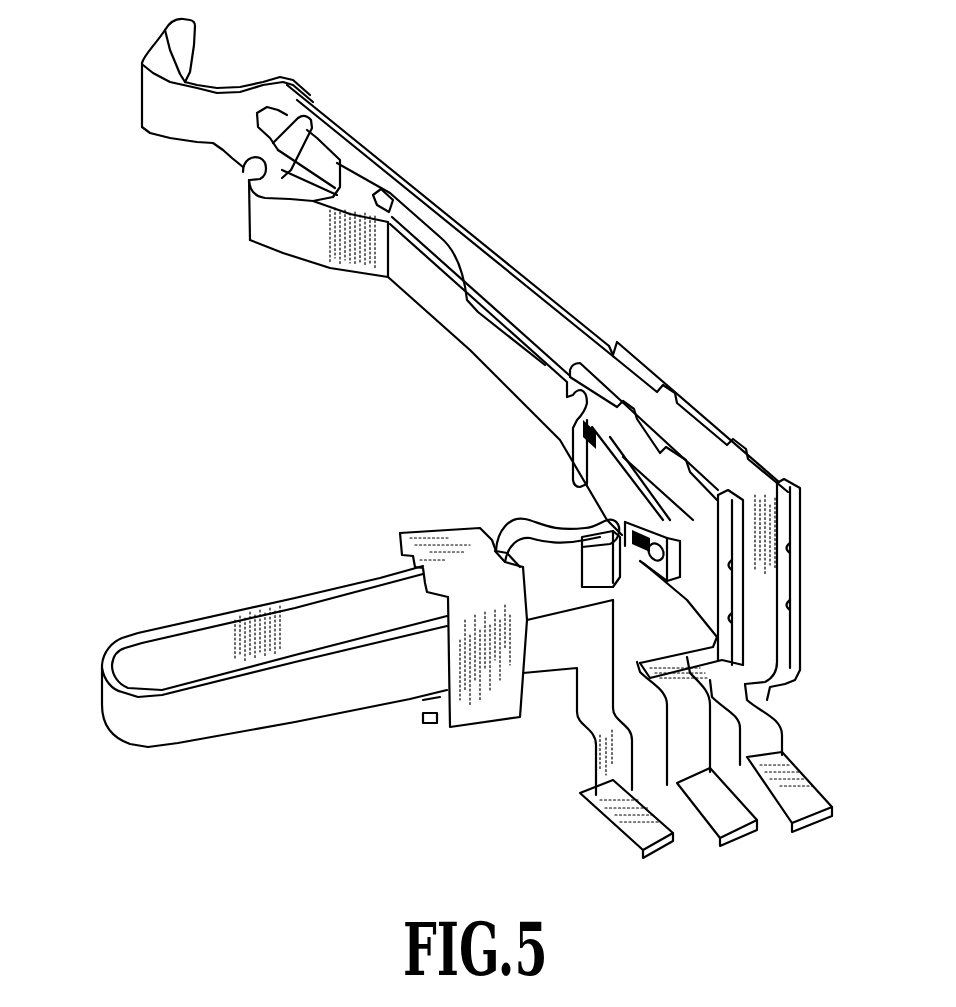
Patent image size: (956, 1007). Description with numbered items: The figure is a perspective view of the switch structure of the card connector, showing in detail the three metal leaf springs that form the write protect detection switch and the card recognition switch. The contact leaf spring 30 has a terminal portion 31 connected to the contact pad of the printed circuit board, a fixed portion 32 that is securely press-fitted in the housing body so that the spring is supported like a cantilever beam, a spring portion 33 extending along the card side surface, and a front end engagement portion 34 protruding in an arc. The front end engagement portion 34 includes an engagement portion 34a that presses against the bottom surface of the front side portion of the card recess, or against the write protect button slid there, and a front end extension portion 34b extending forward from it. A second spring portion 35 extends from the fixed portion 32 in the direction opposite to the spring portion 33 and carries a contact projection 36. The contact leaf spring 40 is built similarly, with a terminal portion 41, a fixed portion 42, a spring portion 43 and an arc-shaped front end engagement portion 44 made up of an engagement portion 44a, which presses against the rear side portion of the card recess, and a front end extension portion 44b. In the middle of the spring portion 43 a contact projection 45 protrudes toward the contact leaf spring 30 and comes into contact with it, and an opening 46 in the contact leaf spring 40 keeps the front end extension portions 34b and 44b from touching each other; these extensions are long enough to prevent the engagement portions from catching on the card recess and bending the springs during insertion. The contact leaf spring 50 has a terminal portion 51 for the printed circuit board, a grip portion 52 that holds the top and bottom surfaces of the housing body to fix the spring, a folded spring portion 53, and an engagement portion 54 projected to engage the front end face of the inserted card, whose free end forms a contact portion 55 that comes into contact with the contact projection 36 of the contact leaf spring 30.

The contact leaf spring 30 is at (455, 506).
The terminal portion 31 is at (712, 805).
The fixed portion 32 is at (647, 447).
The spring portion 33 is at (477, 293).
The front end engagement portion 34 is at (270, 215).
The engagement portion 34a is at (244, 208).
The front end extension portion 34b is at (243, 167).
The spring portion 35 is at (580, 473).
The contact projection 36 is at (643, 573).
The contact leaf spring 40 is at (460, 416).
The terminal portion 41 is at (807, 783).
The fixed portion 42 is at (763, 473).
The spring portion 43 is at (463, 223).
The front end engagement portion 44 is at (180, 83).
The engagement portion 44a is at (147, 100).
The front end extension portion 44b is at (165, 33).
The contact projection 45 is at (405, 208).
The opening 46 is at (322, 152).
The contact leaf spring 50 is at (387, 653).
The terminal portion 51 is at (613, 813).
The grip portion 52 is at (437, 520).
The folded spring portion 53 is at (227, 727).
The engagement portion 54 is at (510, 517).
The contact portion 55 is at (610, 570).